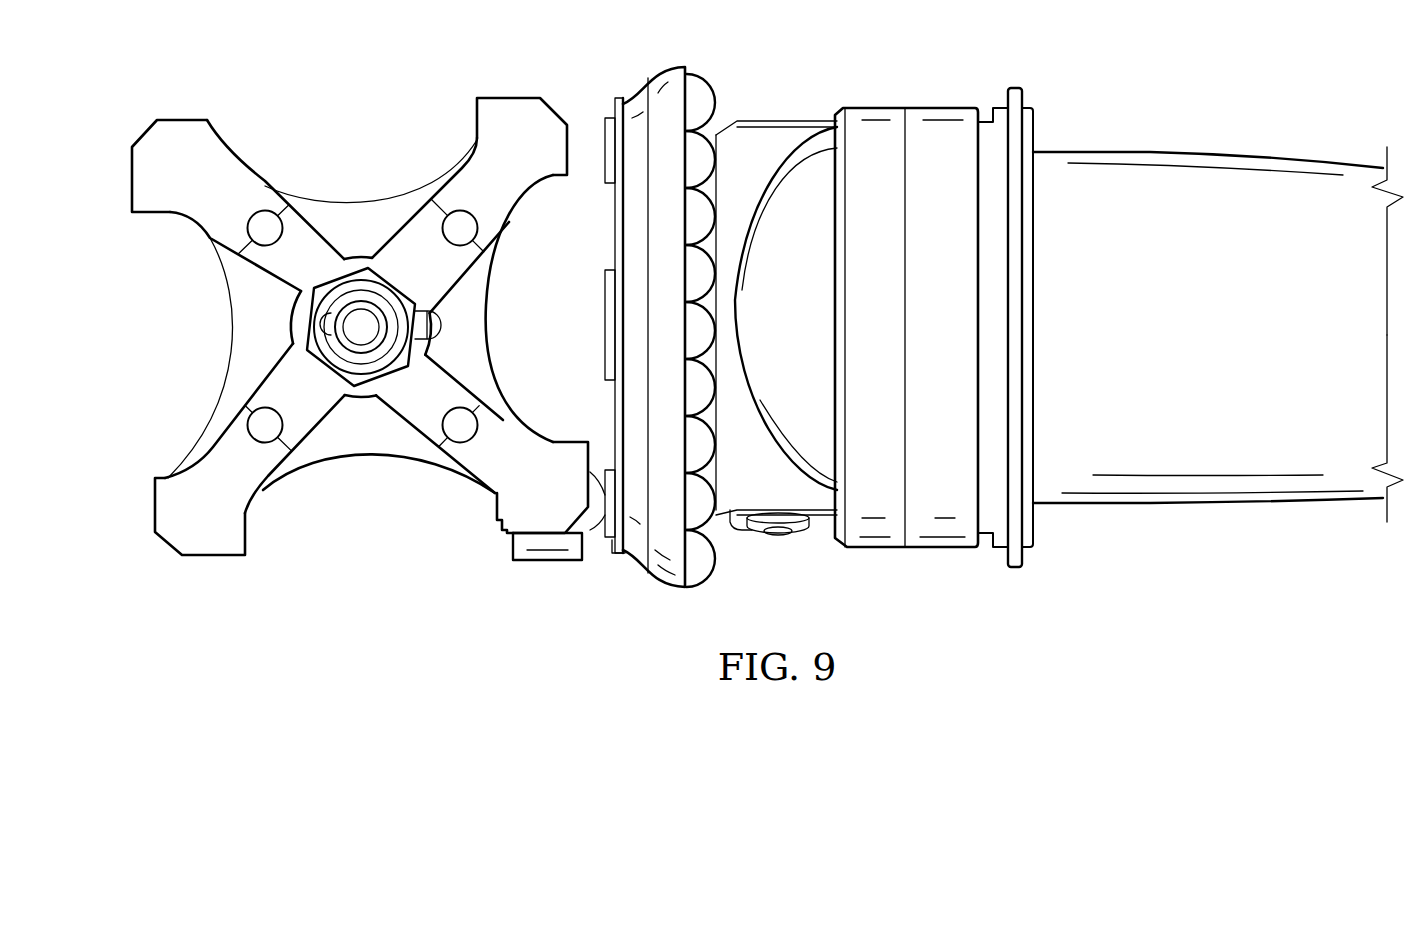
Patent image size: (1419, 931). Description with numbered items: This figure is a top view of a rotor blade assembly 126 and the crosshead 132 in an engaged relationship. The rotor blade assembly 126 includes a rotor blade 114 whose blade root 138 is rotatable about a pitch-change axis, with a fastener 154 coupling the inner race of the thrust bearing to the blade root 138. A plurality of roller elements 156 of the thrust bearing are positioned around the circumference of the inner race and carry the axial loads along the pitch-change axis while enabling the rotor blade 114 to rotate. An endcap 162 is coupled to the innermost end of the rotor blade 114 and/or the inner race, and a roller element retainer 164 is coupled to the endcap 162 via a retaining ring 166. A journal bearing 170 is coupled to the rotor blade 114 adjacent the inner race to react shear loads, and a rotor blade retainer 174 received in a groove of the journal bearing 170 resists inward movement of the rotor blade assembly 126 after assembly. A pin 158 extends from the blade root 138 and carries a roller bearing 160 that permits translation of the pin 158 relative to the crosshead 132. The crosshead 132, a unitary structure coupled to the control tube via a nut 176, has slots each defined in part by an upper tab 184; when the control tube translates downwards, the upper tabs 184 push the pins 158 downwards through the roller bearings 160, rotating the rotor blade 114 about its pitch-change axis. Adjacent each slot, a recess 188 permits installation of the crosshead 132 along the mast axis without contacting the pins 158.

The rotor blade 114 is at (1233, 503).
The rotor blade assembly 126 is at (1235, 148).
The crosshead 132 is at (216, 121).
The blade root 138 is at (795, 175).
The fastener 154 is at (800, 535).
The roller elements 156 is at (707, 573).
The pin 158 is at (598, 493).
The roller bearing 160 is at (553, 560).
The endcap 162 is at (605, 128).
The roller element retainer 164 is at (664, 72).
The retaining ring 166 is at (613, 553).
The journal bearing 170 is at (930, 108).
The rotor blade retainer 174 is at (1013, 88).
The nut 176 is at (277, 263).
The upper tab 184 is at (138, 142).
The recess 188 is at (355, 190).